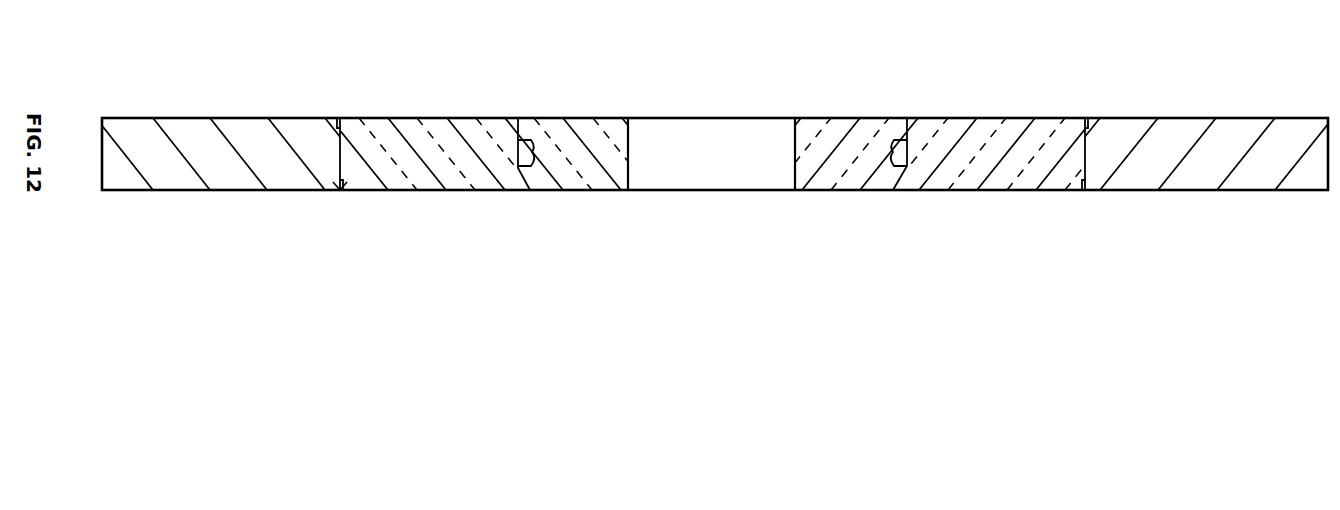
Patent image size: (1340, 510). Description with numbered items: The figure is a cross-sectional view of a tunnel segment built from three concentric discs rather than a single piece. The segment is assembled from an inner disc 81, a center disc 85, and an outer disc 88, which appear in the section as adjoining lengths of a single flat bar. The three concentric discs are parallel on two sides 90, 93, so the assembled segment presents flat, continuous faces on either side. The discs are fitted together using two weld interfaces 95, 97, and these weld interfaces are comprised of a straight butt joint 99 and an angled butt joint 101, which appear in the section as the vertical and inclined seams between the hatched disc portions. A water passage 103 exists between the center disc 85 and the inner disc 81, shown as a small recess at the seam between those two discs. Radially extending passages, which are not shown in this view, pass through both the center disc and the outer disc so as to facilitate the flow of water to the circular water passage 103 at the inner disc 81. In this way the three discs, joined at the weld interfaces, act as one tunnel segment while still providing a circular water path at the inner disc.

The inner disc 81 is at (578, 192).
The center disc 85 is at (990, 186).
The outer disc 88 is at (1201, 184).
The side 90 is at (242, 118).
The side 93 is at (405, 192).
The weld interface 95 is at (366, 110).
The weld interface 97 is at (545, 110).
The straight butt joint 99 is at (918, 116).
The angled butt joint 101 is at (336, 186).
The water passage 103 is at (893, 146).